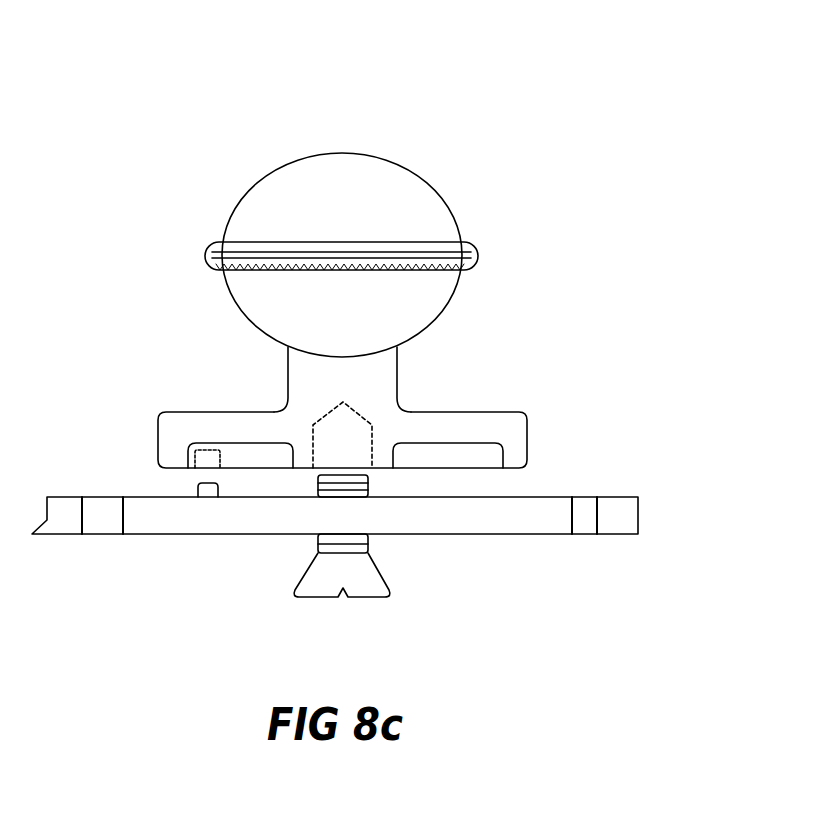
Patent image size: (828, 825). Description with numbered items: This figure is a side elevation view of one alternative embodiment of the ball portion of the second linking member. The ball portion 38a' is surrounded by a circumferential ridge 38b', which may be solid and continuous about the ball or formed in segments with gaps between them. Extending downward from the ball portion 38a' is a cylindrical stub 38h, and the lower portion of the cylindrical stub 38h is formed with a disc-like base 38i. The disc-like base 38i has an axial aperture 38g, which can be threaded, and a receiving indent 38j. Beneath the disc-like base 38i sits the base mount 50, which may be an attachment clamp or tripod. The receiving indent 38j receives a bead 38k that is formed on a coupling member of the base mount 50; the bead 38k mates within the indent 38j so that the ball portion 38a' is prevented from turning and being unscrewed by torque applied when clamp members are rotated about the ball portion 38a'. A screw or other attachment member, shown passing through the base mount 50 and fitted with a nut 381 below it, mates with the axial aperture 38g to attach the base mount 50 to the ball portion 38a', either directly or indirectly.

The ball portion 38a' is at (395, 249).
The circumferential ridge 38b' is at (399, 233).
The axial aperture 38g is at (330, 443).
The cylindrical stub 38h is at (397, 378).
The disc-like base 38i is at (527, 440).
The receiving indent 38j is at (207, 452).
The bead 38k is at (205, 490).
The base mount 50 is at (638, 512).
The nut 381 is at (377, 592).